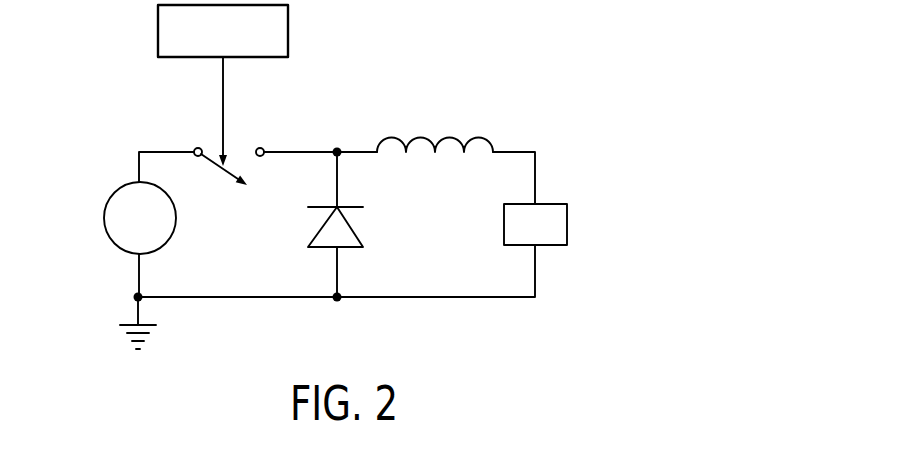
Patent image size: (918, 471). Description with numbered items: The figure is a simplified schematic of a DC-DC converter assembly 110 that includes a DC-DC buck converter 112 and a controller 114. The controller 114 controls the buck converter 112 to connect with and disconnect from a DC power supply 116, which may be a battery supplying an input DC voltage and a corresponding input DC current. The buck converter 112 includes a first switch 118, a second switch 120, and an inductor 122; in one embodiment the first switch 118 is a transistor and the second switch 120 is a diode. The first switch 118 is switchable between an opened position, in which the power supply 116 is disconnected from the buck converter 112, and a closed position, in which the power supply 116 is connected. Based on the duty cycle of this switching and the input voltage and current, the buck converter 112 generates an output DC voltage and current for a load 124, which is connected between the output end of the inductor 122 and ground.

The DC-DC converter assembly 110 is at (541, 84).
The DC-DC buck converter 112 is at (344, 123).
The controller 114 is at (290, 30).
The DC power supply 116 is at (108, 195).
The first switch 118 is at (225, 171).
The second switch 120 is at (354, 229).
The inductor 122 is at (448, 137).
The load 124 is at (568, 215).